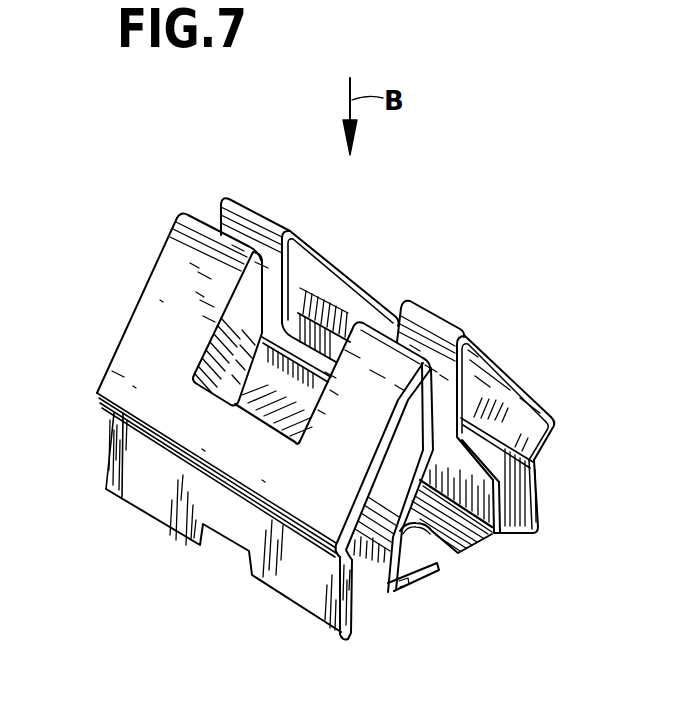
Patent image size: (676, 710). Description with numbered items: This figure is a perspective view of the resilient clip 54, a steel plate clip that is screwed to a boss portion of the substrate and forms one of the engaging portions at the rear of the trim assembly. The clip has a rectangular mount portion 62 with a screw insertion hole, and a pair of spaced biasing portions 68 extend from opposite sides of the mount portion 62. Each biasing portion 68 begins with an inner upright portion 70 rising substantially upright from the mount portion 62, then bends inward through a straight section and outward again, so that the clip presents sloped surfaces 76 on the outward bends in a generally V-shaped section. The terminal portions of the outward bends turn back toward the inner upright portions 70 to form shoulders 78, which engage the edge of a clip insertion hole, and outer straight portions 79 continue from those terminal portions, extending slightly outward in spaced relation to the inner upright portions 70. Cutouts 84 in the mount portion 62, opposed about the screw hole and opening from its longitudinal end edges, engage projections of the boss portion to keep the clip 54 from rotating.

The resilient clip 54 is at (376, 267).
The mount portion 62 is at (466, 530).
The biasing portions 68 is at (178, 261).
The inner upright portions 70 is at (371, 580).
The sloped surfaces 76 is at (190, 428).
The shoulders 78 is at (338, 560).
The outer straight portions 79 is at (123, 460).
The cutouts 84 is at (433, 555).